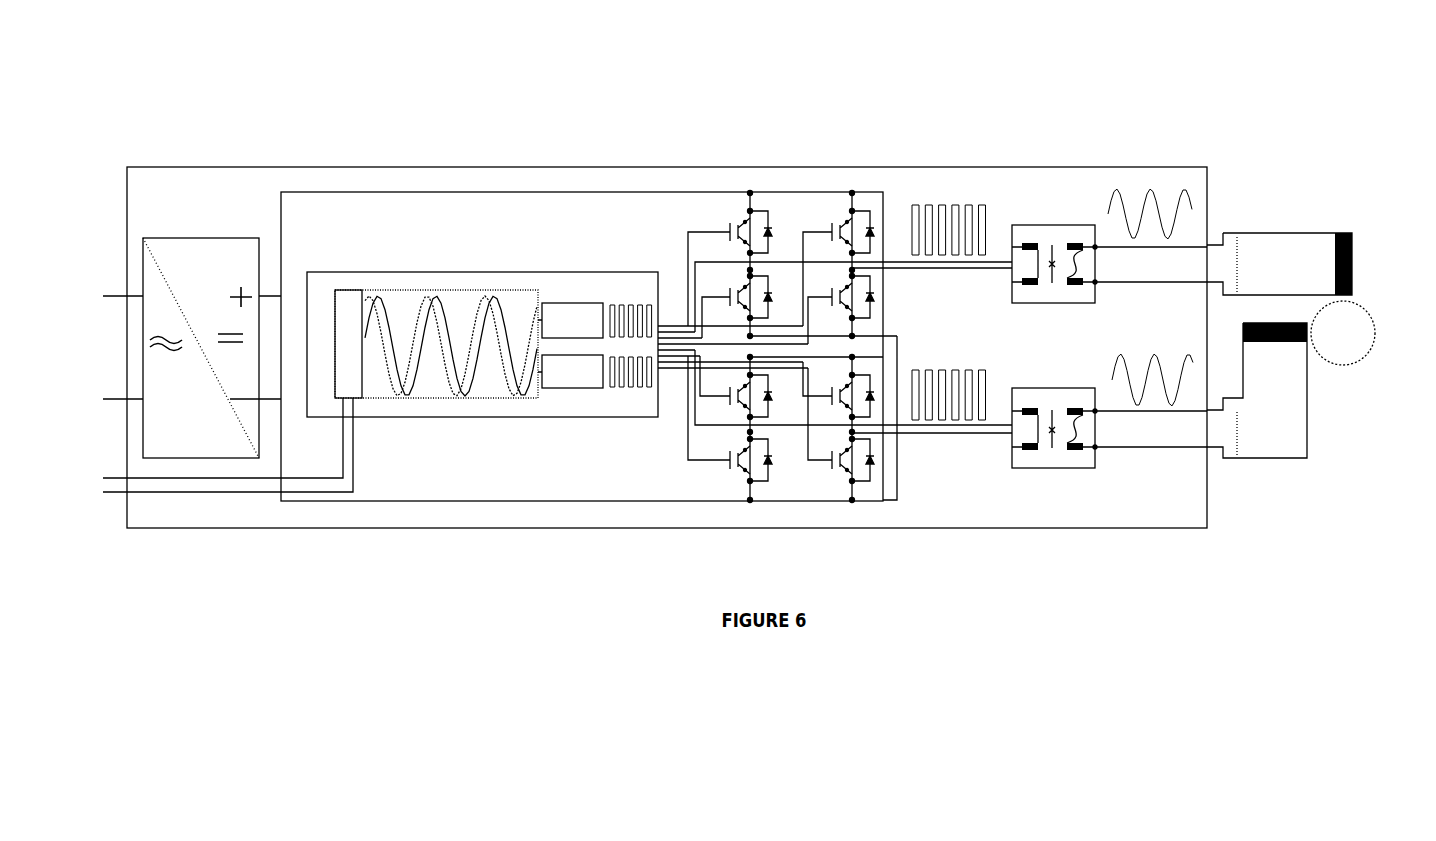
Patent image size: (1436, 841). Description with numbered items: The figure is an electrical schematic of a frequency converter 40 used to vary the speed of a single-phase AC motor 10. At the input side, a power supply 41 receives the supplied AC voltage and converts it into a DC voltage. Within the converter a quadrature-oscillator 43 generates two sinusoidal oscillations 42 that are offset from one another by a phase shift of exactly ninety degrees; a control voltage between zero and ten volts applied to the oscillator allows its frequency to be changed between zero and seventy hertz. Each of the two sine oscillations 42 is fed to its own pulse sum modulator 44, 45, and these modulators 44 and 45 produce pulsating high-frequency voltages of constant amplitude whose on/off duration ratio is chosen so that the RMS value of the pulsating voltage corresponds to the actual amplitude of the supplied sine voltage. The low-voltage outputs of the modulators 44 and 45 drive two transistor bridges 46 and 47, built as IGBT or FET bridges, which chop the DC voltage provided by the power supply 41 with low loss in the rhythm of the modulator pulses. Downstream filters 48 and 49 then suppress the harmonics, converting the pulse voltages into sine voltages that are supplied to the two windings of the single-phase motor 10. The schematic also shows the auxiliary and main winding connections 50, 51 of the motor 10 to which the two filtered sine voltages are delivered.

The single-phase AC motor 10 is at (1342, 367).
The frequency converter 40 is at (283, 530).
The power supply 41 is at (178, 232).
The sinusoidal oscillations 42 is at (383, 305).
The quadrature-oscillator 43 is at (358, 400).
The pulse sum modulator 44 is at (563, 305).
The pulse sum modulator 45 is at (560, 392).
The transistor bridge 46 is at (770, 210).
The transistor bridge 47 is at (787, 408).
The filter 48 is at (1040, 225).
The filter 49 is at (1058, 460).
The auxiliary winding (Vaux) 50 is at (1250, 245).
The main winding (Vmain) 51 is at (1250, 442).